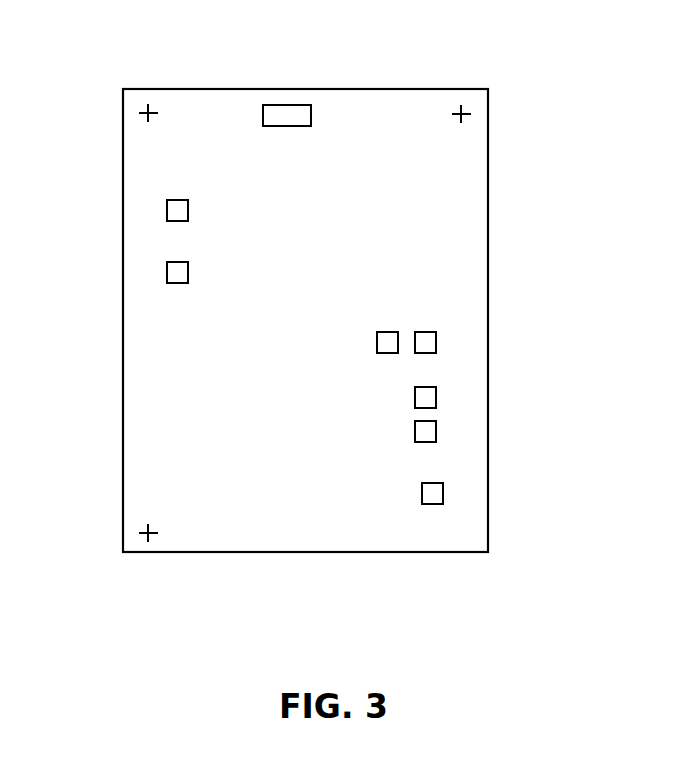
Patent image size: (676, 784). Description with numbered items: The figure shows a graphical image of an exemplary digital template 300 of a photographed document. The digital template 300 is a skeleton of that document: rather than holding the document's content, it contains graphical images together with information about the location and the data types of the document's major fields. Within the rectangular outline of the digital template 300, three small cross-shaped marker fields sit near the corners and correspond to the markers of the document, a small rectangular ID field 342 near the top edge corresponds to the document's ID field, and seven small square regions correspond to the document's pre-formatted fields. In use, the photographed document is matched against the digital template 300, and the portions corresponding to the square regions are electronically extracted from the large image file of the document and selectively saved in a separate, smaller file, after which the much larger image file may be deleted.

The digital template 300 is at (472, 56).
The ID field region 342 is at (280, 102).